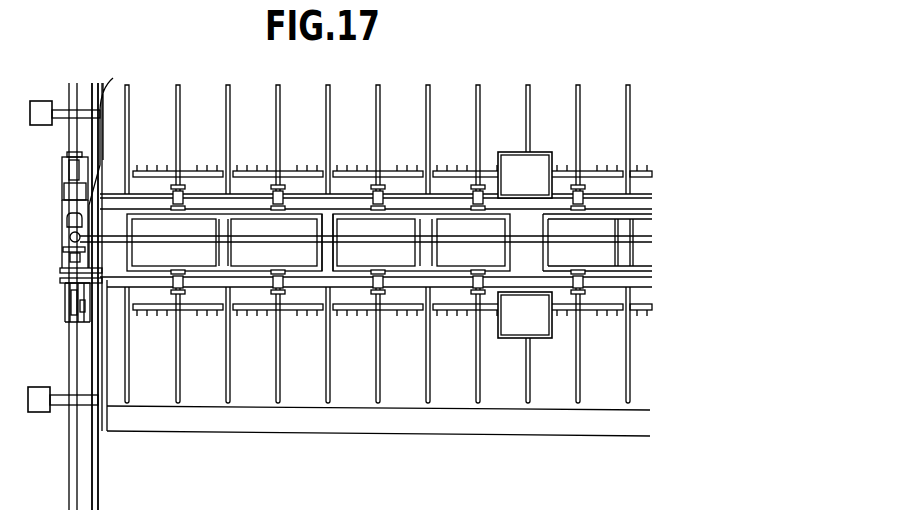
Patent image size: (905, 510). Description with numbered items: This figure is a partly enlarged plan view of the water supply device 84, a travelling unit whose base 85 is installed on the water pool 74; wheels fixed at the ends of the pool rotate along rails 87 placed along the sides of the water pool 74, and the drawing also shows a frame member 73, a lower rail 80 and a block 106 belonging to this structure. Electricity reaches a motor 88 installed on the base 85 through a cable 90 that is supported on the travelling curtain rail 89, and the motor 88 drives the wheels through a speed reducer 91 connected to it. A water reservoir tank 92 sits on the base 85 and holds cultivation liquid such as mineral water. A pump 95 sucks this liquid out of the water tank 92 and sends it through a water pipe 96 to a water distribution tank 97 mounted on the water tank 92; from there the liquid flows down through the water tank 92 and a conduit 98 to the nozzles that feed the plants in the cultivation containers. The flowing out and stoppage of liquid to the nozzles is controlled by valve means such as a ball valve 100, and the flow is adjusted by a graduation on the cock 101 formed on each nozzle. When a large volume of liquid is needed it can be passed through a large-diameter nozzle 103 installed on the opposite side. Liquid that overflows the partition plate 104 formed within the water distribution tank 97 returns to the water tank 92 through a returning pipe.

The frame 73 is at (105, 364).
The water pool 74 is at (322, 425).
The lower guide rod 80 is at (280, 395).
The water supply device 84 is at (452, 79).
The base 85 is at (143, 280).
The rails 87 is at (69, 465).
The motor 88 is at (88, 308).
The travelling curtain rail 89 is at (98, 465).
The cable 90 is at (106, 162).
The speed reducer 91 is at (70, 305).
The water reservoir tank 92 is at (327, 252).
The pump 95 is at (67, 230).
The water pipe 96 is at (152, 238).
The water distribution tank 97 is at (302, 227).
The conduit 98 is at (307, 315).
The ball valve 100 is at (275, 286).
The cock 101 is at (212, 311).
The nozzle 103 is at (240, 170).
The partition plate 104 is at (233, 252).
The block 106 is at (513, 255).